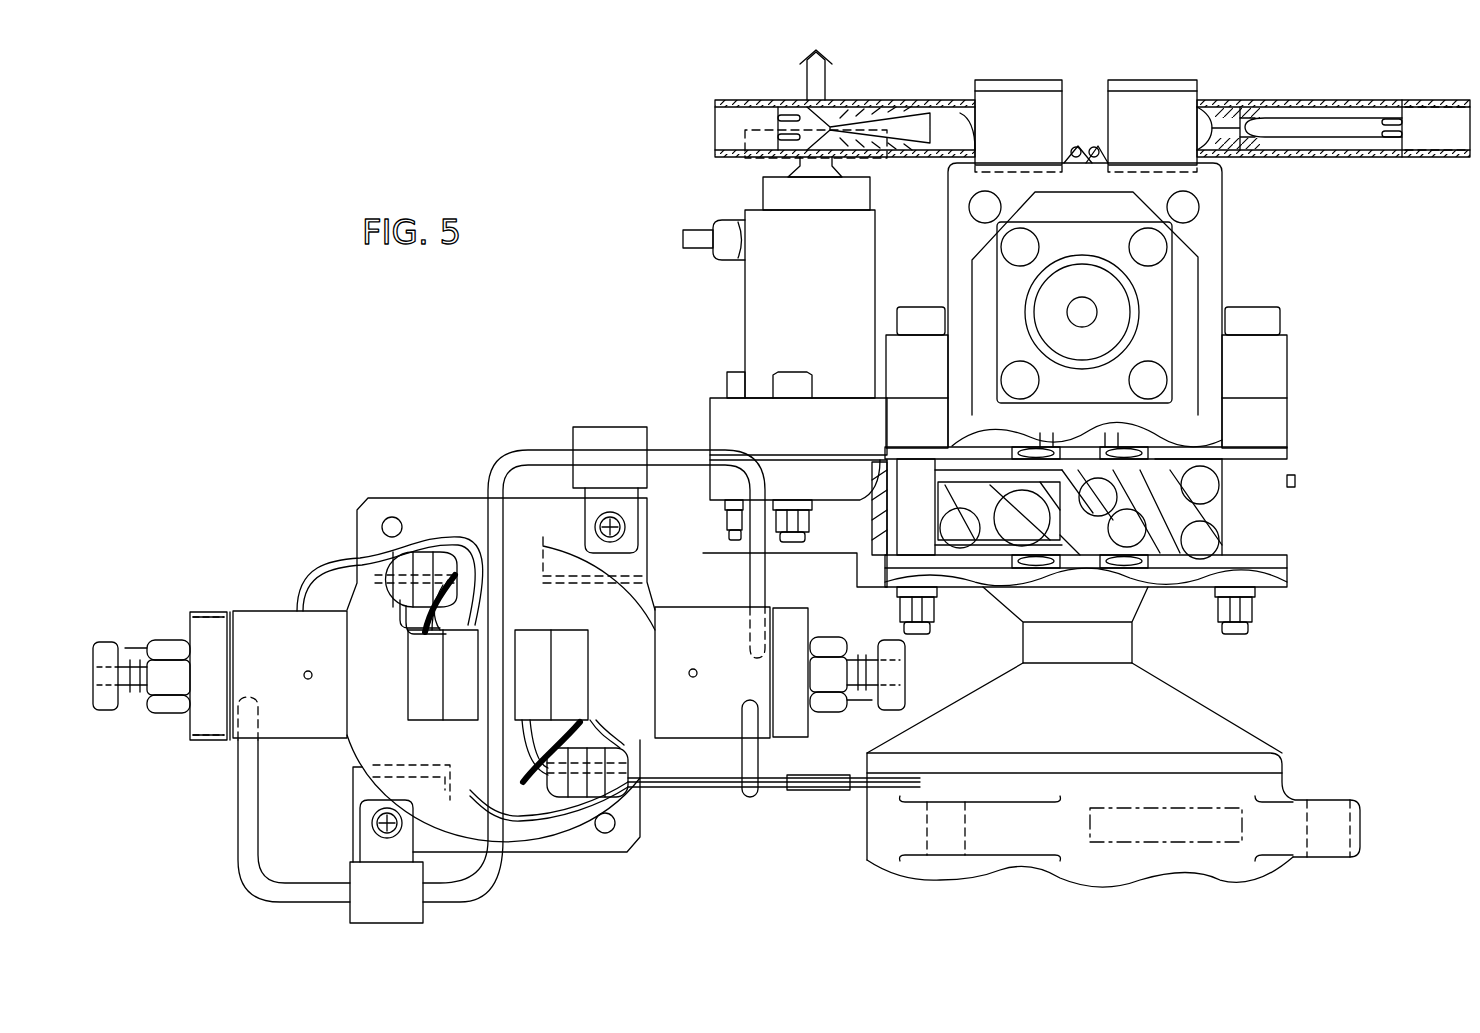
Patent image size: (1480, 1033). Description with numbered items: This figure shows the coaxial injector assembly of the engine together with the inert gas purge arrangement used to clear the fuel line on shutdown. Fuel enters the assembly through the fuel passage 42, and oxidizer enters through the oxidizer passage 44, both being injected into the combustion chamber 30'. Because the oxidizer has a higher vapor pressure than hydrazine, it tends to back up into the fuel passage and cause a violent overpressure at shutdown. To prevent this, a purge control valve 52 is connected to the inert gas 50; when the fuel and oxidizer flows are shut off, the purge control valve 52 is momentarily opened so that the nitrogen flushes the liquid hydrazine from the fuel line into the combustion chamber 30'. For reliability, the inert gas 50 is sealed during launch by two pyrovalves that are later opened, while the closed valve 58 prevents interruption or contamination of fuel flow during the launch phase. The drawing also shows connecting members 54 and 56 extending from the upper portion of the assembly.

The first connecting bar 54 is at (848, 90).
The second connecting bar 56 is at (1312, 90).
The purge control valve 52 is at (748, 302).
The oxidizer passage 44 is at (1155, 510).
The fuel passage 42 is at (1063, 513).
The combustion chamber 30' is at (1113, 775).
The closed valve 58 is at (309, 734).
The inert gas 50 is at (643, 740).